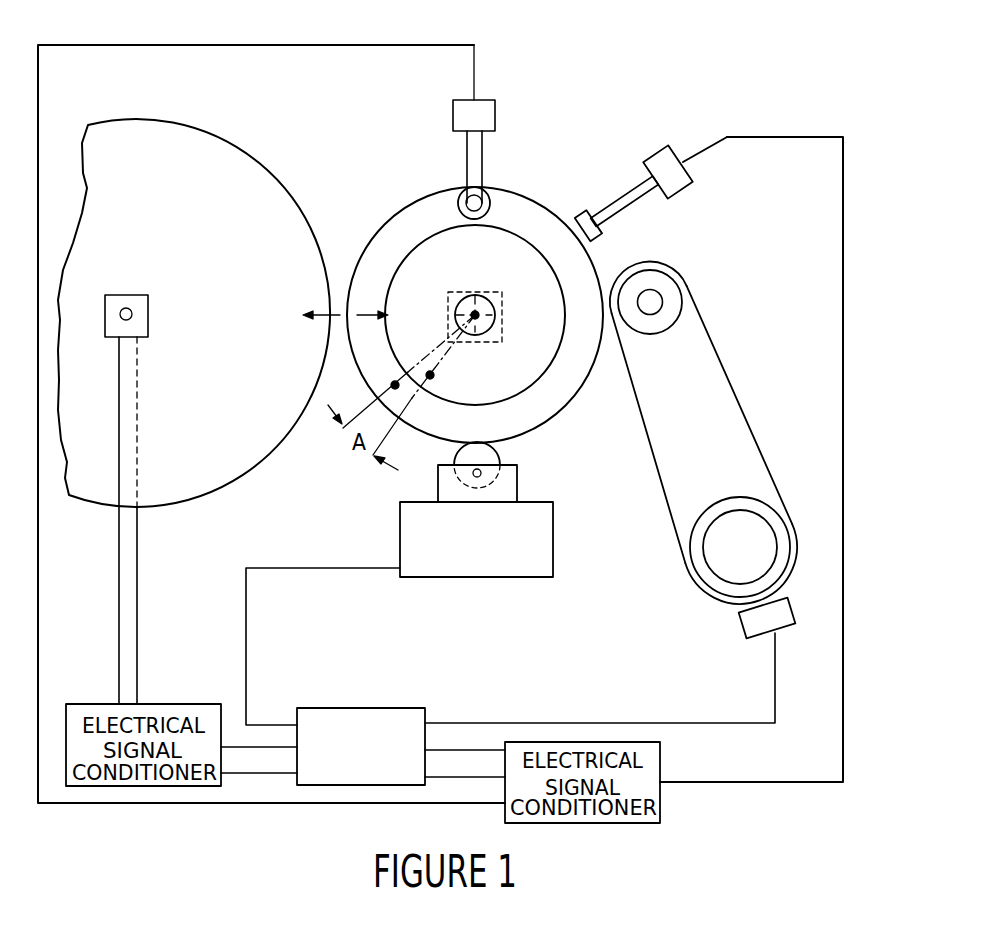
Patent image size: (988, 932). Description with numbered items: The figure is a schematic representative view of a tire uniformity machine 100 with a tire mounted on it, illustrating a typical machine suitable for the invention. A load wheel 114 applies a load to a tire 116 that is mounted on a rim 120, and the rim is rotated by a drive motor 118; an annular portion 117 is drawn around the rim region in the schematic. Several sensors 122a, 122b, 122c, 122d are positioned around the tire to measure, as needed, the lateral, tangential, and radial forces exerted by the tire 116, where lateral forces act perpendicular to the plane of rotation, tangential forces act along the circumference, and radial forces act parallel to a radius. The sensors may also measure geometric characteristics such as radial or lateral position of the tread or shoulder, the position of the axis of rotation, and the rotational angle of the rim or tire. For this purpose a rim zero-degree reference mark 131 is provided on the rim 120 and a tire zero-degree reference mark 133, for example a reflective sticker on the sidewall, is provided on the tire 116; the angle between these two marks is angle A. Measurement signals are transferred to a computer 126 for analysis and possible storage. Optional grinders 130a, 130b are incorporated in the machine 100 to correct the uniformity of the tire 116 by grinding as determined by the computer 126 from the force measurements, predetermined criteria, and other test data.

The tire uniformity machine 100 is at (600, 64).
The load wheel 114 is at (232, 143).
The tire 116 is at (462, 188).
The annular rotating ring 117 is at (398, 243).
The drive motor 118 is at (448, 309).
The rim 120 is at (522, 358).
The sensor 122a is at (646, 160).
The sensor 122b is at (495, 122).
The sensor 122c is at (125, 306).
The sensor 122d is at (150, 317).
The computer 126 is at (428, 712).
The grinder 130a is at (713, 333).
The grinder 130b is at (390, 535).
The rim zero-degree reference mark 131 is at (432, 377).
The tire zero-degree reference mark 133 is at (395, 385).